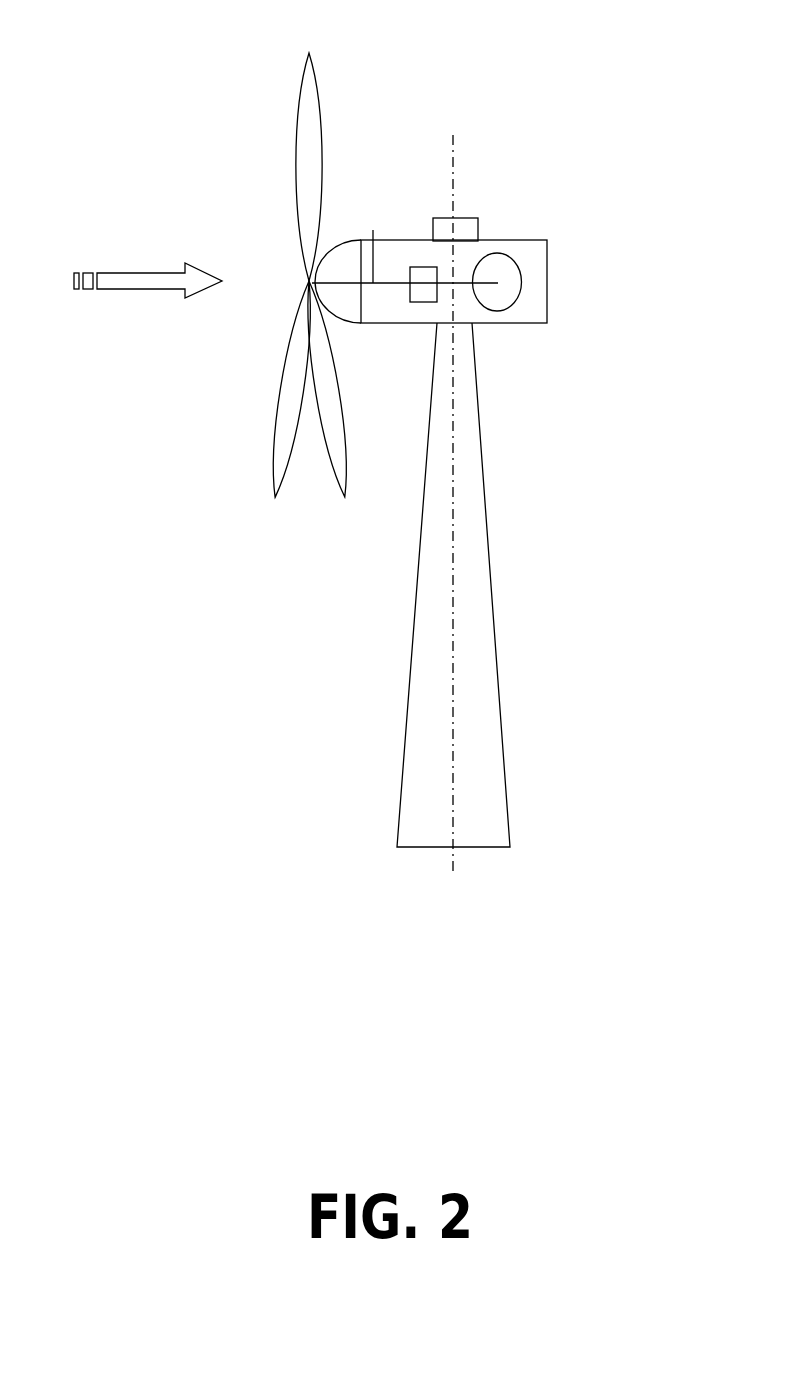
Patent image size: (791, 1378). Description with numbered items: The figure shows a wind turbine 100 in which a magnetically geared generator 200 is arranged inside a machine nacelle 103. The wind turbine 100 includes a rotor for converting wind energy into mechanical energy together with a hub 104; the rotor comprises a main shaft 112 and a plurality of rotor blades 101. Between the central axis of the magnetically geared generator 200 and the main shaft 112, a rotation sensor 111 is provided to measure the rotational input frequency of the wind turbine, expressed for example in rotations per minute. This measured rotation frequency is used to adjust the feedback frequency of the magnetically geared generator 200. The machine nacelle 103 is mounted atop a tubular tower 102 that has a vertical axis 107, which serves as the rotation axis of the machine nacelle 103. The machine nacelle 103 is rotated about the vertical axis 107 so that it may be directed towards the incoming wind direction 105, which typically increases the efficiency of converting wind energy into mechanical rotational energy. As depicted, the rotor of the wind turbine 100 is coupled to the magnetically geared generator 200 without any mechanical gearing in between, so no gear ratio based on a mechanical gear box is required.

The wind turbine 100 is at (516, 168).
The rotor blades 101 is at (295, 187).
The tubular tower 102 is at (495, 618).
The machine nacelle 103 is at (548, 287).
The hub 104 is at (350, 239).
The incoming wind direction 105 is at (187, 295).
The vertical axis 107 is at (453, 135).
The rotation sensor 111 is at (423, 302).
The main shaft 112 is at (397, 240).
The magnetically geared generator 200 is at (512, 303).